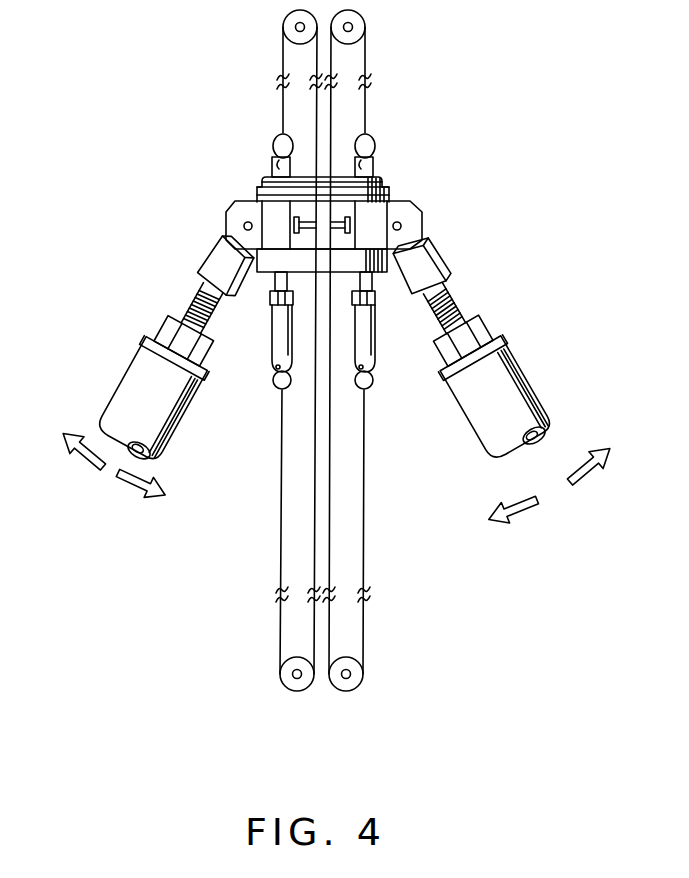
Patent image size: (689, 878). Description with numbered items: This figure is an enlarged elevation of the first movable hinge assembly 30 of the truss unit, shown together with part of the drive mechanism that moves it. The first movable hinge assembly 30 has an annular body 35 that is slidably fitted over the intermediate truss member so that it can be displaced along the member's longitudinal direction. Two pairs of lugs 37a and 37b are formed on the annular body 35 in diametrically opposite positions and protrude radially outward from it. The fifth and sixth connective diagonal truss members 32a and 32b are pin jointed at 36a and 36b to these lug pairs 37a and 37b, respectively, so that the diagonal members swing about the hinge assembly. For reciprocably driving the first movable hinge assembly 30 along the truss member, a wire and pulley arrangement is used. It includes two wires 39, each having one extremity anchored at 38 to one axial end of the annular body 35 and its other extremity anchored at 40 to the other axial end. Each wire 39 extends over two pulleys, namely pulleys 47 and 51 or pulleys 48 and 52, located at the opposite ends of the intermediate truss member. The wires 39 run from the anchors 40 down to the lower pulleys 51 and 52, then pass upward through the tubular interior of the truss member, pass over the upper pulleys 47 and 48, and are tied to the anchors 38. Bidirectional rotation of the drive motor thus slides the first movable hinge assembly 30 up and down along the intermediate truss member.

The first movable hinge assembly 30 is at (260, 278).
The fifth connective diagonal truss member 32a is at (118, 382).
The sixth connective diagonal truss member 32b is at (537, 387).
The annular body 35 is at (389, 180).
The pin joint 36a is at (243, 226).
The pin joint 36b is at (402, 226).
The lug pair 37a is at (232, 205).
The lug pair 37b is at (412, 213).
The anchor 38 is at (277, 157).
The wire 39 is at (283, 94).
The anchor 40 is at (275, 338).
The pulley 47 is at (365, 25).
The pulley 48 is at (283, 27).
The pulley 51 is at (363, 674).
The pulley 52 is at (280, 674).